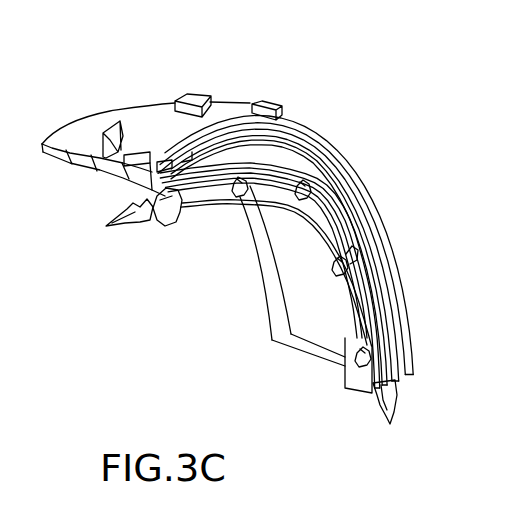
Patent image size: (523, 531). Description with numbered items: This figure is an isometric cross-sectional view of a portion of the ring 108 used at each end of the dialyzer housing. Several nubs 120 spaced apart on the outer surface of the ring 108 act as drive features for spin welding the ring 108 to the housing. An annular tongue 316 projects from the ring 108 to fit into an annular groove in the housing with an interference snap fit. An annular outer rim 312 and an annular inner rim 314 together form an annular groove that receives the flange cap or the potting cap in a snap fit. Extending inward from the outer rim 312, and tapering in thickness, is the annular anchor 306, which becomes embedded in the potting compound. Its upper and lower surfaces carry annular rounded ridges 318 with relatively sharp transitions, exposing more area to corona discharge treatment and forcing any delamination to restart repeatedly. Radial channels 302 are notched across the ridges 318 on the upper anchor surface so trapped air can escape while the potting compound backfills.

The ring 108 is at (331, 142).
The nubs 120 is at (184, 95).
The radial channels 302 is at (357, 355).
The annular anchor 306 is at (153, 224).
The annular outer rim 312 is at (150, 153).
The annular inner rim 314 is at (192, 152).
The annular tongue 316 is at (43, 152).
The annular rounded ridges 318 is at (106, 226).